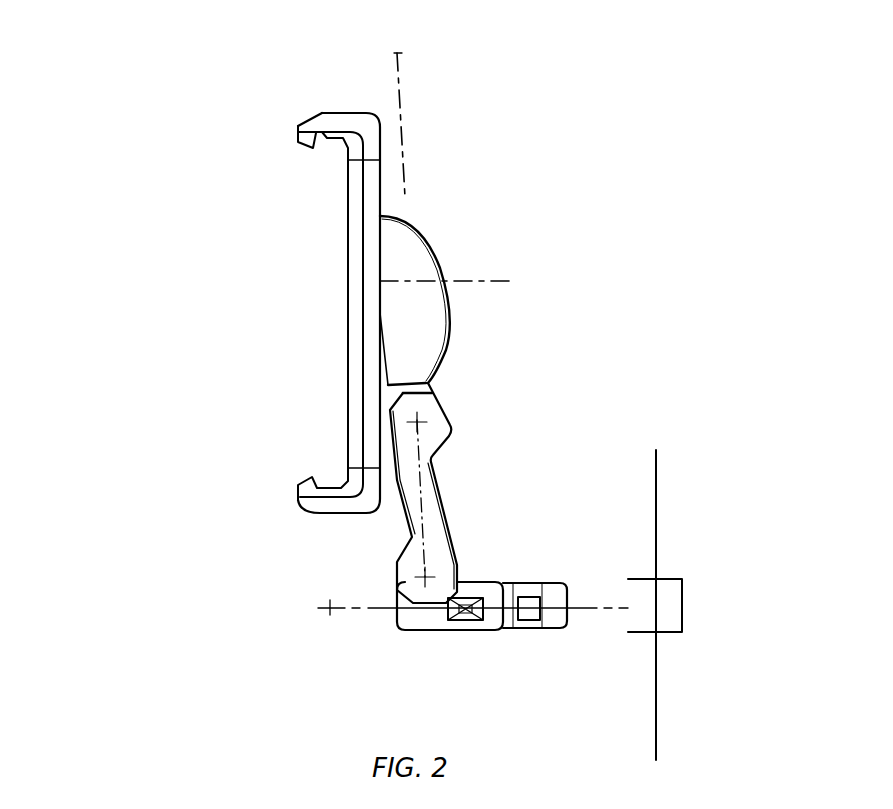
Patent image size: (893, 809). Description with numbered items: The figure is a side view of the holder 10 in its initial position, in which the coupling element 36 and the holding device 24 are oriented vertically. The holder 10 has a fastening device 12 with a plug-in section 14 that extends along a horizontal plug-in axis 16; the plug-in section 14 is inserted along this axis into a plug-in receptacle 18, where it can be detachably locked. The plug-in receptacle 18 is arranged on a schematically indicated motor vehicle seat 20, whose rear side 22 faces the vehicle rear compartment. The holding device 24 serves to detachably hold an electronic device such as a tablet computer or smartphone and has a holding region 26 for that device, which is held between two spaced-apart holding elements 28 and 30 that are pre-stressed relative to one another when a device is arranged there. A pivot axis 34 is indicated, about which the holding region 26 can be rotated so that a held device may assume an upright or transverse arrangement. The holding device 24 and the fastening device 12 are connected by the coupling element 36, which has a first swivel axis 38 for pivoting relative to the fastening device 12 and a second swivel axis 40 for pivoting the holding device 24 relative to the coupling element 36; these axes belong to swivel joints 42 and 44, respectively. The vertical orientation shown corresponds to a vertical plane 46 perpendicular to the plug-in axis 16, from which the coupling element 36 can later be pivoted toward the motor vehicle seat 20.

The holder 10 is at (162, 147).
The fastening device 12 is at (462, 662).
The plug-in section 14 is at (552, 625).
The plug-in axis 16 is at (330, 615).
The plug-in receptacle 18 is at (685, 578).
The motor vehicle seat 20 is at (722, 490).
The rear side 22 is at (670, 598).
The holding device 24 is at (286, 308).
The holding region 26 is at (317, 323).
The holding element 28 is at (310, 128).
The holding element 30 is at (307, 492).
The pivot axis 34 is at (510, 280).
The coupling element 36 is at (449, 409).
The first swivel axis 38 is at (410, 577).
The second swivel axis 40 is at (417, 422).
The swivel joint 42 is at (465, 550).
The swivel joint 44 is at (447, 385).
The vertical plane 46 is at (400, 63).